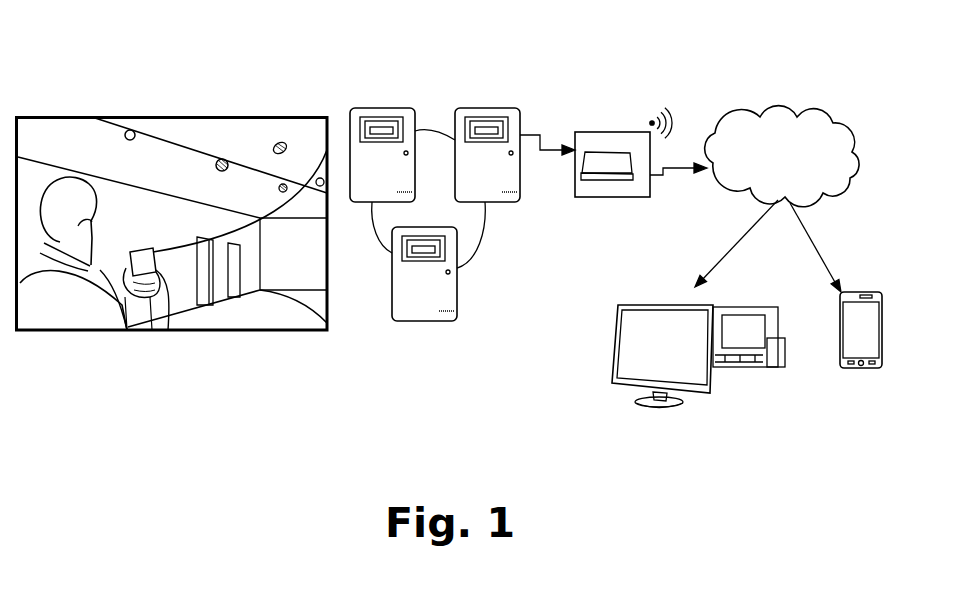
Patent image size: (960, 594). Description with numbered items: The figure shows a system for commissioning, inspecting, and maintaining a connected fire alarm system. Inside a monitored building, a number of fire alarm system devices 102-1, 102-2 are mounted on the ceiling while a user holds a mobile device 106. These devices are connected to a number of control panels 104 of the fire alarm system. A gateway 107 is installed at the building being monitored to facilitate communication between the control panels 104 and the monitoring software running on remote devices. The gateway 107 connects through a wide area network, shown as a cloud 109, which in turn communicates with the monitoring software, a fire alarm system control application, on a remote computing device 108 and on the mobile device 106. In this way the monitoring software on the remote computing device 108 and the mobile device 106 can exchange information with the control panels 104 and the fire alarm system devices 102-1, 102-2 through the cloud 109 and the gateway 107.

The fire alarm system device 102-1 is at (129, 130).
The fire alarm system device 102-2 is at (219, 161).
The control panels 104 is at (350, 143).
The mobile device 106 is at (165, 305).
The gateway 107 is at (609, 150).
The remote computing device 108 is at (618, 340).
The wide area network 109 is at (790, 100).